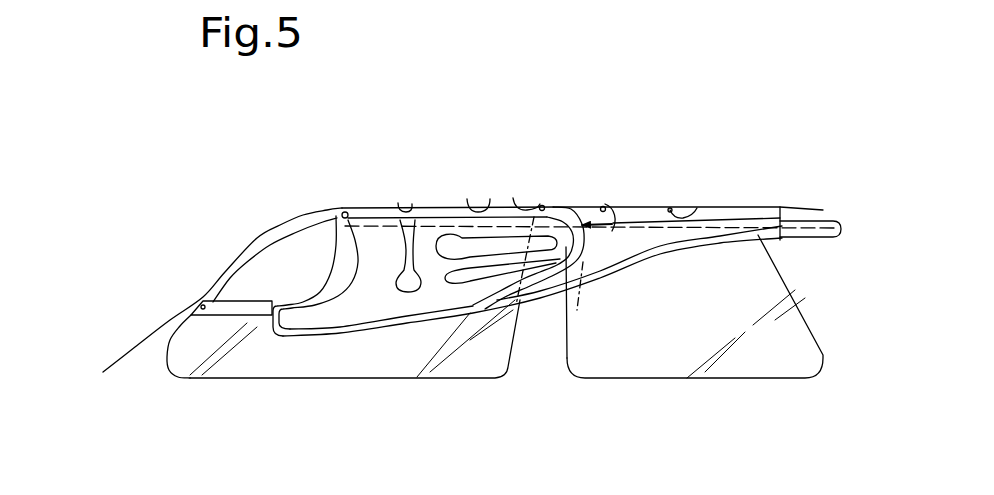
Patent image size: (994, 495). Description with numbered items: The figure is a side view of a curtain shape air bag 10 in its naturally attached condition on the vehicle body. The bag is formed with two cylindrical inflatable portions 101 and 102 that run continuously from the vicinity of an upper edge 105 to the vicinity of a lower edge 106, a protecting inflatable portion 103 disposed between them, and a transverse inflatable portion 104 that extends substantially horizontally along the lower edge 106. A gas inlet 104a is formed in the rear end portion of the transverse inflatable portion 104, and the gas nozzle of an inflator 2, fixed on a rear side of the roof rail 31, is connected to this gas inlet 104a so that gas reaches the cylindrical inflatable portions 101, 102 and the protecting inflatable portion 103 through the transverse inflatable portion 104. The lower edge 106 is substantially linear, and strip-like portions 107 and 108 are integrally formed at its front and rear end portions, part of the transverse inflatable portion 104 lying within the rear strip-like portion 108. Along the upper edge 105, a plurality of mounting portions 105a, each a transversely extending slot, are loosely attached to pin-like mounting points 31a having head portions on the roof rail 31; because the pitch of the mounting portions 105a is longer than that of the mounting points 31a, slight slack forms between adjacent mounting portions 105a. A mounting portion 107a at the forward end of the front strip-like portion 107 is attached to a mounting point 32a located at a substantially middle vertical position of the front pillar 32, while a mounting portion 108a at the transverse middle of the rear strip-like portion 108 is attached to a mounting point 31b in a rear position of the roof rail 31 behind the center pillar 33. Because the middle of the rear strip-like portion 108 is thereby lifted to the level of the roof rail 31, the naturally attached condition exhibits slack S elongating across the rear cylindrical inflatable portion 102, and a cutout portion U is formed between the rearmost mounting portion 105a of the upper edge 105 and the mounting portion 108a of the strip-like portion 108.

The inflator 2 is at (817, 235).
The curtain shape air bag 10 is at (303, 276).
The roof rail 31 is at (607, 237).
The mounting points 31a is at (330, 209).
The mounting point 31b is at (672, 207).
The front pillar 32 is at (223, 285).
The mounting point 32a is at (193, 305).
The center pillar 33 is at (537, 347).
The cylindrical inflatable portion 101 is at (327, 209).
The cylindrical inflatable portion 102 is at (620, 227).
The protecting inflatable portion 103 is at (430, 212).
The transverse inflatable portion 104 is at (580, 262).
The gas inlet 104a is at (343, 212).
The upper edge 105 is at (552, 212).
The mounting portions 105a is at (512, 206).
The lower edge 106 is at (470, 313).
The strip-like portion 107 is at (244, 308).
The mounting portion 107a is at (203, 318).
The strip-like portion 108 is at (732, 239).
The mounting portion 108a is at (700, 216).
The slack S is at (597, 253).
The cutout portion U is at (625, 215).